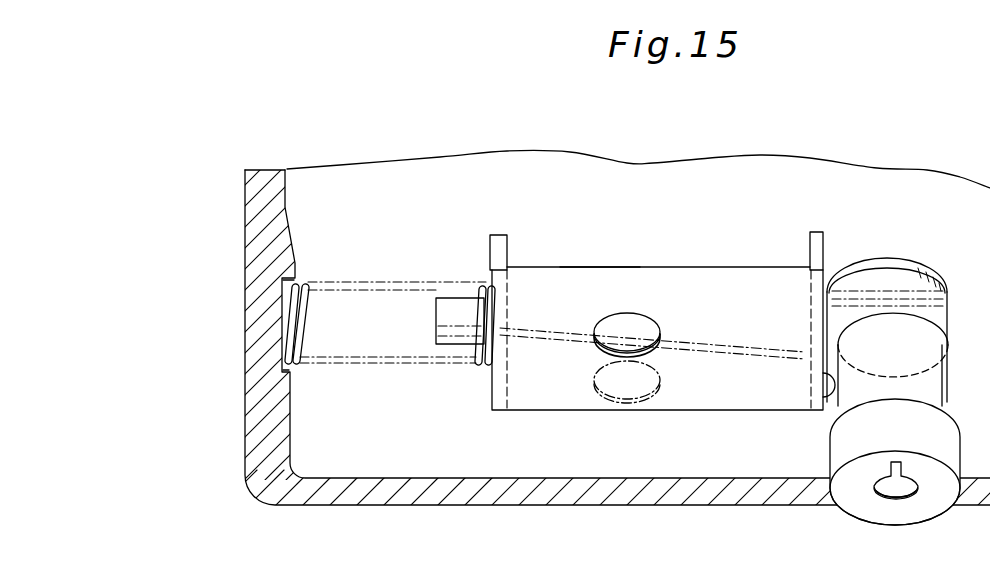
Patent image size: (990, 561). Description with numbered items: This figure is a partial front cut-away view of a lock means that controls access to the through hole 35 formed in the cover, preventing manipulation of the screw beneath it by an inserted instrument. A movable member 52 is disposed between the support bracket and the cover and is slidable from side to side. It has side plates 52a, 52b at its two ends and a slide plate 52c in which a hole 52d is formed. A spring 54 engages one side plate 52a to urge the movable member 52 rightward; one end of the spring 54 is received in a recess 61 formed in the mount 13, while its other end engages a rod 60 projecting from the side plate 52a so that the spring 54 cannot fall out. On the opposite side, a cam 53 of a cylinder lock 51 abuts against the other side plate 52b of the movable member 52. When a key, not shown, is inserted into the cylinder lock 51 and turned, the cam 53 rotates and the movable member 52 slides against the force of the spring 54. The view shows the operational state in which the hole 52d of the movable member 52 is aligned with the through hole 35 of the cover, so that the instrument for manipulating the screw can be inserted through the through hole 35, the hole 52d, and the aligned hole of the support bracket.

The mount 13 is at (262, 315).
The recess 61 is at (291, 319).
The spring 54 is at (296, 364).
The rod 60 is at (452, 318).
The movable member 52 is at (560, 257).
The side plate 52a is at (492, 385).
The side plate 52b is at (828, 398).
The slide plate 52c is at (610, 293).
The hole 52d is at (639, 330).
The through hole 35 is at (664, 392).
The cam 53 is at (886, 264).
The cylinder lock 51 is at (922, 516).